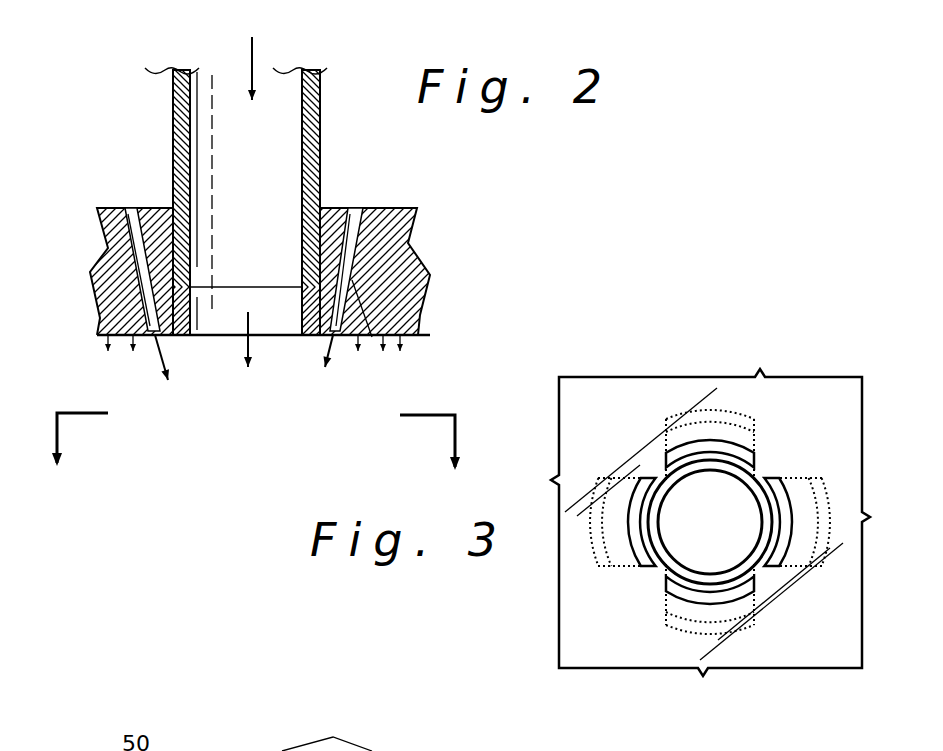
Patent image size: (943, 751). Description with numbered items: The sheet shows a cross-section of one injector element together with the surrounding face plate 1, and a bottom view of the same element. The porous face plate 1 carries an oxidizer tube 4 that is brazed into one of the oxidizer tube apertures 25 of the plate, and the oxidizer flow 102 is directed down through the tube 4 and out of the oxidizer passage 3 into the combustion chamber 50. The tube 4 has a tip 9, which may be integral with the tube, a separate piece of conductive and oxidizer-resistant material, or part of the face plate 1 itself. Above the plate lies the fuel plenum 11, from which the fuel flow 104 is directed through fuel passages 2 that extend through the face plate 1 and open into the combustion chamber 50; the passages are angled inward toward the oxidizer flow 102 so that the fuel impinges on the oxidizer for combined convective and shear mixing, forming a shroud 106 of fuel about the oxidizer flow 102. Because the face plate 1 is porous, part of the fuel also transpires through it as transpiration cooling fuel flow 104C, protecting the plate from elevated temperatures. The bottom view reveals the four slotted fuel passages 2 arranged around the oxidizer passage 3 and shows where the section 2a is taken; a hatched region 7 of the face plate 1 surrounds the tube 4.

In FIG. 2, the face plate 1 is at (117, 342).
In FIG. 3, the face plate 1 is at (582, 668).
In FIG. 2, the fuel passages 2 is at (107, 252).
In FIG. 3, the fuel passages 2 is at (632, 565).
In FIG. 2, the oxidizer passage 3 is at (252, 175).
In FIG. 3, the oxidizer passage 3 is at (718, 536).
In FIG. 2, the oxidizer tube 4 is at (173, 170).
In FIG. 2, the shoulder 7 is at (320, 205).
In FIG. 2, the oxidizer tube tip 9 is at (310, 340).
In FIG. 3, the oxidizer tube tip 9 is at (660, 477).
In FIG. 2, the fuel plenum 11 is at (390, 142).
In FIG. 2, the oxidizer tube apertures 25 is at (173, 338).
In FIG. 2, the combustion chamber 50 is at (268, 412).
In FIG. 2, the oxidizer flow 102 is at (253, 50).
In FIG. 2, the fuel flow 104 is at (128, 204).
In FIG. 2, the transpiration cooling fuel flow 104C is at (430, 340).
In FIG. 2, the shroud 106 is at (333, 350).
In FIG. 2, the section line 2a- 2a is at (261, 426).